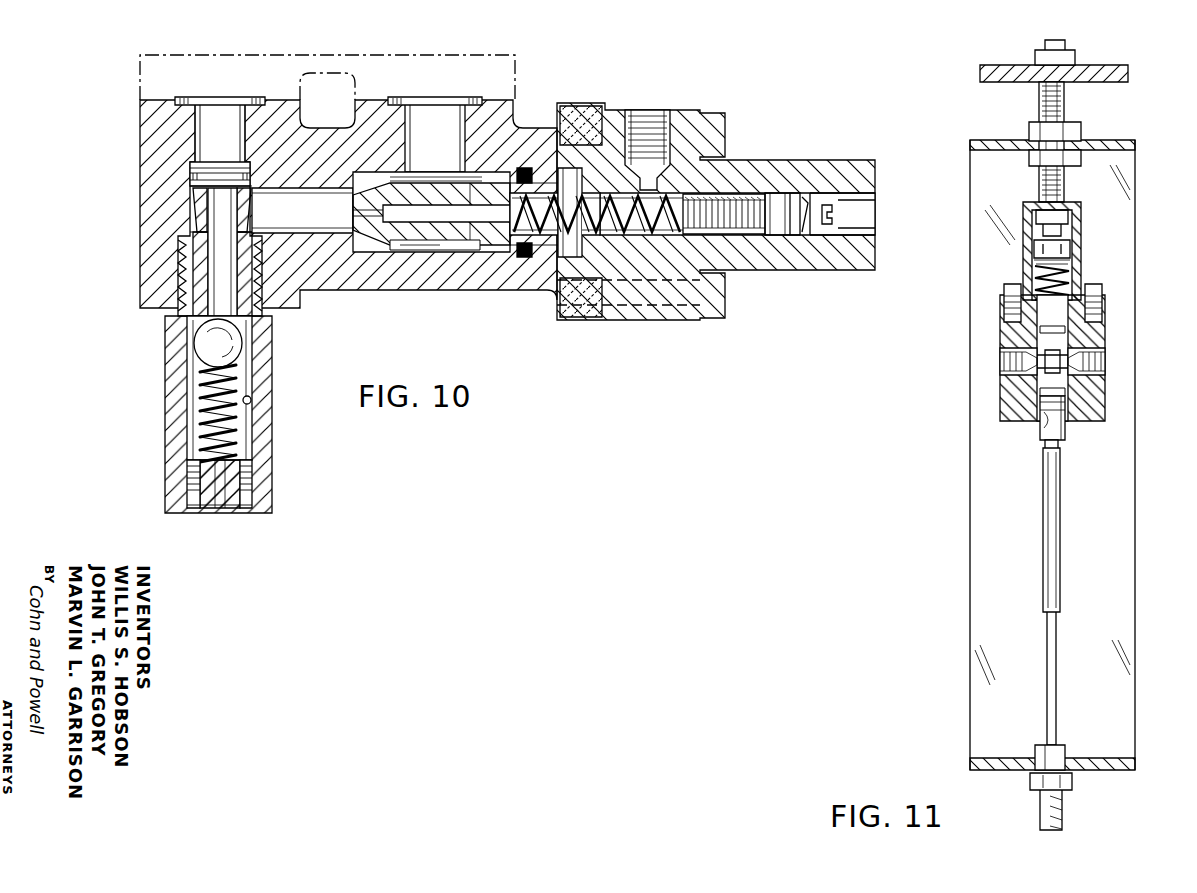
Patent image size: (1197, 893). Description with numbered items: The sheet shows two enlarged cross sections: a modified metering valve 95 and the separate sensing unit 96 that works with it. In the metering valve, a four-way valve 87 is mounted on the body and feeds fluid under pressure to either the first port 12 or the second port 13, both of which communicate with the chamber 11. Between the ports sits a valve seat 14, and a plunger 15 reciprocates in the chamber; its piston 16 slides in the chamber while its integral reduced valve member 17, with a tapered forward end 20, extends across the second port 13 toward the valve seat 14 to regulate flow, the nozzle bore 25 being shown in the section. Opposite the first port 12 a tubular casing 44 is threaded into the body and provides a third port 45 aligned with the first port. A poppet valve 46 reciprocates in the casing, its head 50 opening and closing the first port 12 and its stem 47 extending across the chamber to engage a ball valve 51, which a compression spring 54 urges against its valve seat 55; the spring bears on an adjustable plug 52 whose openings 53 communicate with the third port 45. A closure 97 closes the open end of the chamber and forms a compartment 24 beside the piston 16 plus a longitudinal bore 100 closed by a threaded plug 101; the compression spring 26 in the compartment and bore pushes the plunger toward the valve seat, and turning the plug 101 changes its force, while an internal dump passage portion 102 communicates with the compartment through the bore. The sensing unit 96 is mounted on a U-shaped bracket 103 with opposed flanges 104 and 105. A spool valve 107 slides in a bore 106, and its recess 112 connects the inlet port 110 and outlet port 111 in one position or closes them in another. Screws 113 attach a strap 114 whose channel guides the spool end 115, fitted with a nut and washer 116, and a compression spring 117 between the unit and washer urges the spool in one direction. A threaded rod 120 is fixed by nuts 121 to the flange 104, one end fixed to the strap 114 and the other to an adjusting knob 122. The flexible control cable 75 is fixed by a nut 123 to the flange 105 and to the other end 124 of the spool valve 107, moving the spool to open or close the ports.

In FIG. 10, the four-way valve 87 is at (138, 76).
In FIG. 10, the metering valve 95 is at (138, 122).
In FIG. 10, the first port 12 is at (243, 112).
In FIG. 10, the second port 13 is at (466, 120).
In FIG. 10, the head 50 is at (218, 178).
In FIG. 10, the poppet valve 46 is at (190, 206).
In FIG. 10, the valve seat 55 is at (240, 343).
In FIG. 10, the stem 47 is at (212, 283).
In FIG. 10, the chamber 11 is at (276, 240).
In FIG. 10, the plunger 15 is at (433, 184).
In FIG. 10, the tapered forward end 20 is at (367, 190).
In FIG. 10, the nozzle bore 25 is at (356, 213).
In FIG. 10, the valve seat 14 is at (403, 247).
In FIG. 10, the valve member 17 is at (440, 247).
In FIG. 10, the piston 16 is at (506, 250).
In FIG. 10, the compartment 24 is at (565, 168).
In FIG. 10, the closure 97 is at (755, 175).
In FIG. 10, the compression spring 26 is at (636, 237).
In FIG. 10, the longitudinal bore 100 is at (668, 240).
In FIG. 10, the threaded plug 101 is at (820, 185).
In FIG. 10, the internal dump passage portion 102 is at (660, 125).
In FIG. 10, the tubular casing 44 is at (165, 415).
In FIG. 10, the ball valve 51 is at (206, 343).
In FIG. 10, the third port 45 is at (251, 404).
In FIG. 10, the compression spring 54 is at (238, 447).
In FIG. 10, the openings 53 is at (186, 490).
In FIG. 10, the adjustable plug 52 is at (220, 506).
In FIG. 11, the U-shaped bracket 103 is at (968, 536).
In FIG. 11, the bracket flange 104 is at (1125, 140).
In FIG. 11, the bracket flange 105 is at (968, 758).
In FIG. 11, the adjusting knob 122 is at (1000, 65).
In FIG. 11, the threaded rod 120 is at (1040, 100).
In FIG. 11, the nuts 121 is at (1029, 128).
In FIG. 11, the strap 114 is at (1081, 215).
In FIG. 11, the spool end 115 is at (1040, 242).
In FIG. 11, the nut and washer 116 is at (1036, 260).
In FIG. 11, the compression spring 117 is at (1036, 273).
In FIG. 11, the sensing unit 96 is at (998, 404).
In FIG. 11, the screws 113 is at (1102, 292).
In FIG. 11, the inlet port 110 is at (1005, 368).
In FIG. 11, the outlet port 111 is at (1100, 372).
In FIG. 11, the recess 112 is at (1050, 348).
In FIG. 11, the bore 106 is at (1040, 415).
In FIG. 11, the spool valve 107 is at (1063, 430).
In FIG. 11, the other end 124 is at (1061, 570).
In FIG. 11, the nut 123 is at (1068, 780).
In FIG. 11, the flexible control cable 75 is at (1063, 818).